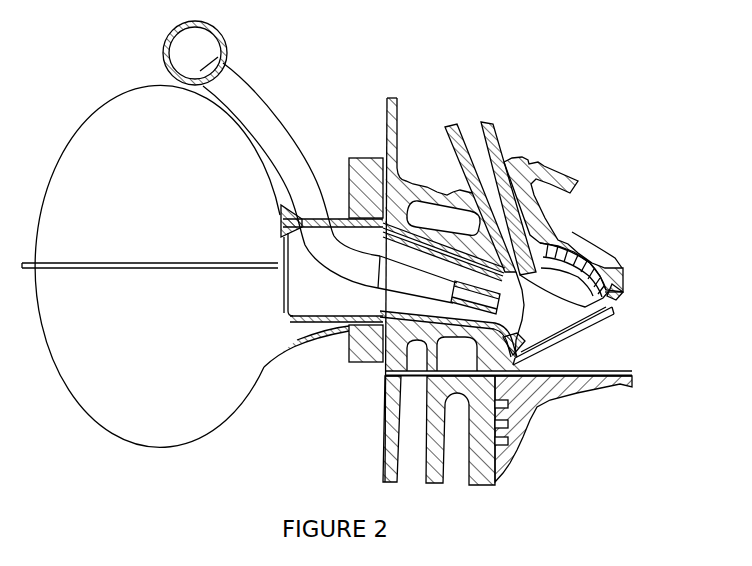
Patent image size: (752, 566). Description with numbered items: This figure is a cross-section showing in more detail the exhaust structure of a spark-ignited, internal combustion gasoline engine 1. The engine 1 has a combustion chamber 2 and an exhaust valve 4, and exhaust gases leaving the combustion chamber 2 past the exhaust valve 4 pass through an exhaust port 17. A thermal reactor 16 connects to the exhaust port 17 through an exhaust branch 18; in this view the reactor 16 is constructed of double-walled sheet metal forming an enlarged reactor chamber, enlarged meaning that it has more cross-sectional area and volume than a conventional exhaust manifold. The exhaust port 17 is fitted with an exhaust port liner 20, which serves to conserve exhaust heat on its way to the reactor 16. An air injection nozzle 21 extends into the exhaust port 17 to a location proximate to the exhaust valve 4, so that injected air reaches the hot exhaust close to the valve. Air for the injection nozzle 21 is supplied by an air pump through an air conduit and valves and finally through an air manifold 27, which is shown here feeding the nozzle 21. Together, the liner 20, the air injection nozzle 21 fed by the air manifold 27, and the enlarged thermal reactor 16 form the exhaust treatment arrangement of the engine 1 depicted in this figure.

The internal combustion gasoline engine 1 is at (357, 105).
The combustion chamber 2 is at (563, 324).
The exhaust valve 4 is at (560, 312).
The thermal reactor 16 is at (83, 113).
The exhaust port 17 is at (399, 281).
The exhaust branch 18 is at (337, 338).
The exhaust port liner 20 is at (493, 263).
The air injection nozzle 21 is at (458, 306).
The air manifold 27 is at (165, 40).